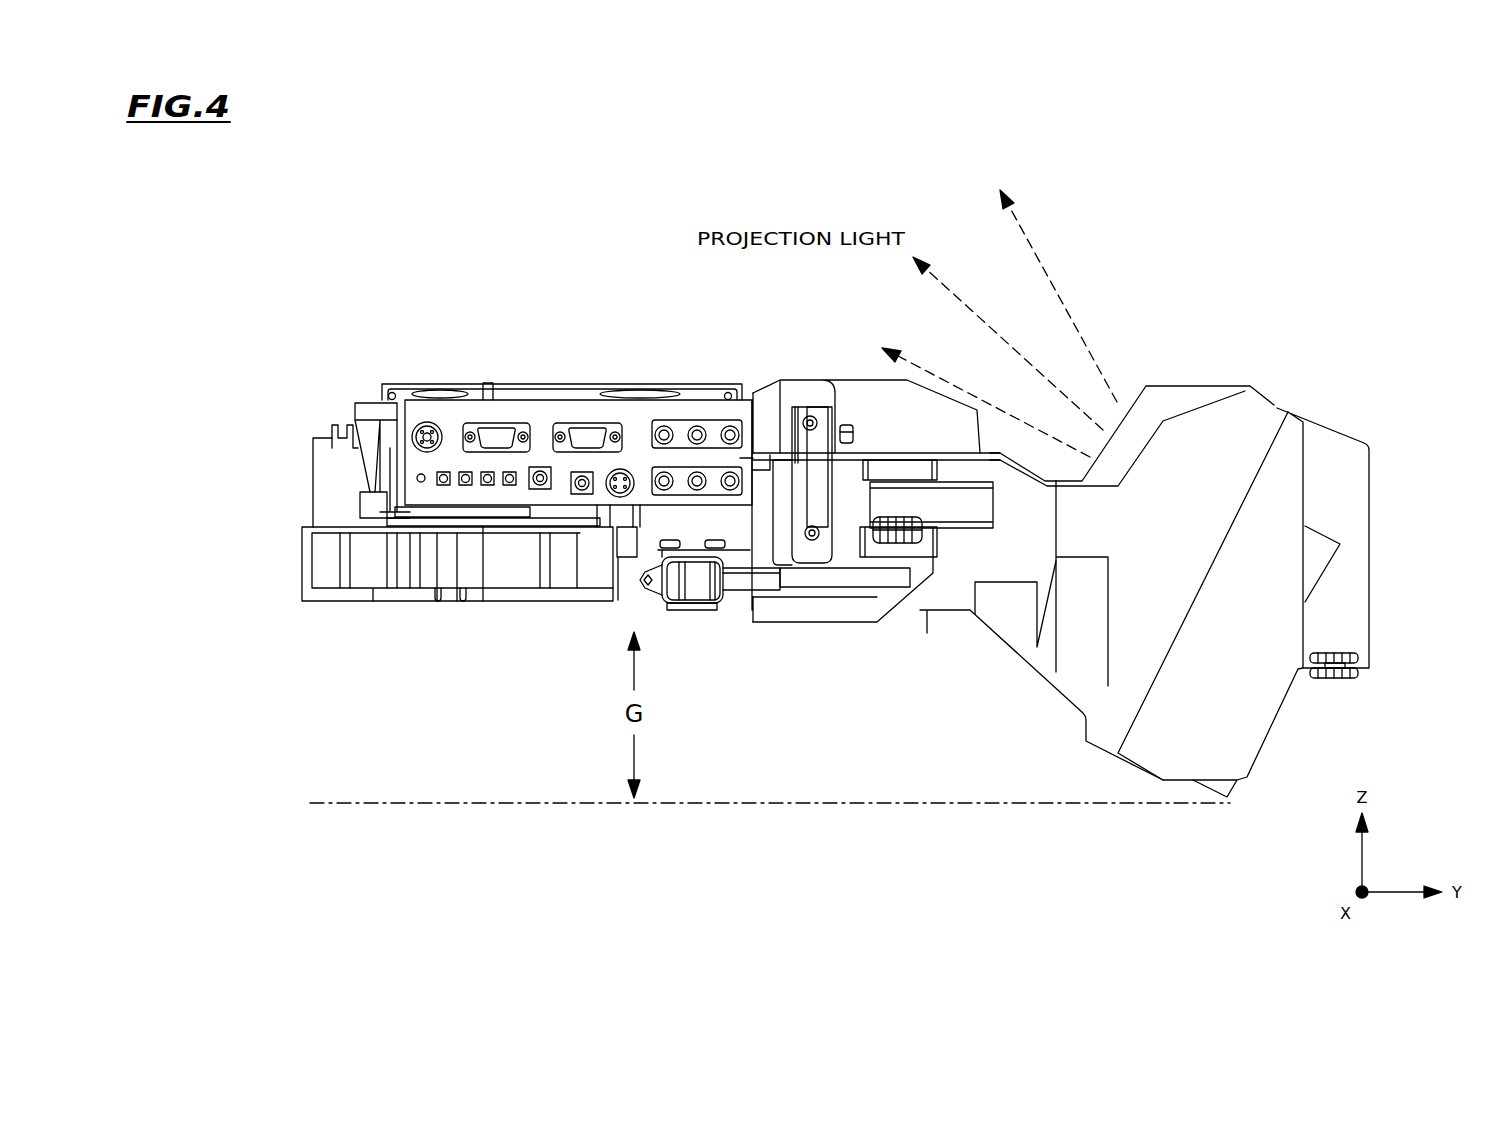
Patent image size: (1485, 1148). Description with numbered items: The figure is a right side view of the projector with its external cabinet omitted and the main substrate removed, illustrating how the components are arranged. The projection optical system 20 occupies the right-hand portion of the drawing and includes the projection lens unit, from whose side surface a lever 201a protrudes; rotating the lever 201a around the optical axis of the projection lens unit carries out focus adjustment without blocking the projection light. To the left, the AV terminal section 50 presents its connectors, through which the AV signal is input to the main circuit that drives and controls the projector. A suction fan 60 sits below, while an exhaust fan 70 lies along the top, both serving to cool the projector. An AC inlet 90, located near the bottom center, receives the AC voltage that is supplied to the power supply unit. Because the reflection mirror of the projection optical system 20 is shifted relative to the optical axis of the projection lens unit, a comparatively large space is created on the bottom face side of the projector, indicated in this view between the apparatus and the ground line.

The projection optical system 20 is at (1277, 410).
The AV terminal section 50 is at (538, 410).
The suction fan 60 is at (352, 603).
The exhaust fan 70 is at (430, 384).
The AC inlet 90 is at (695, 585).
The lever 201a is at (833, 408).